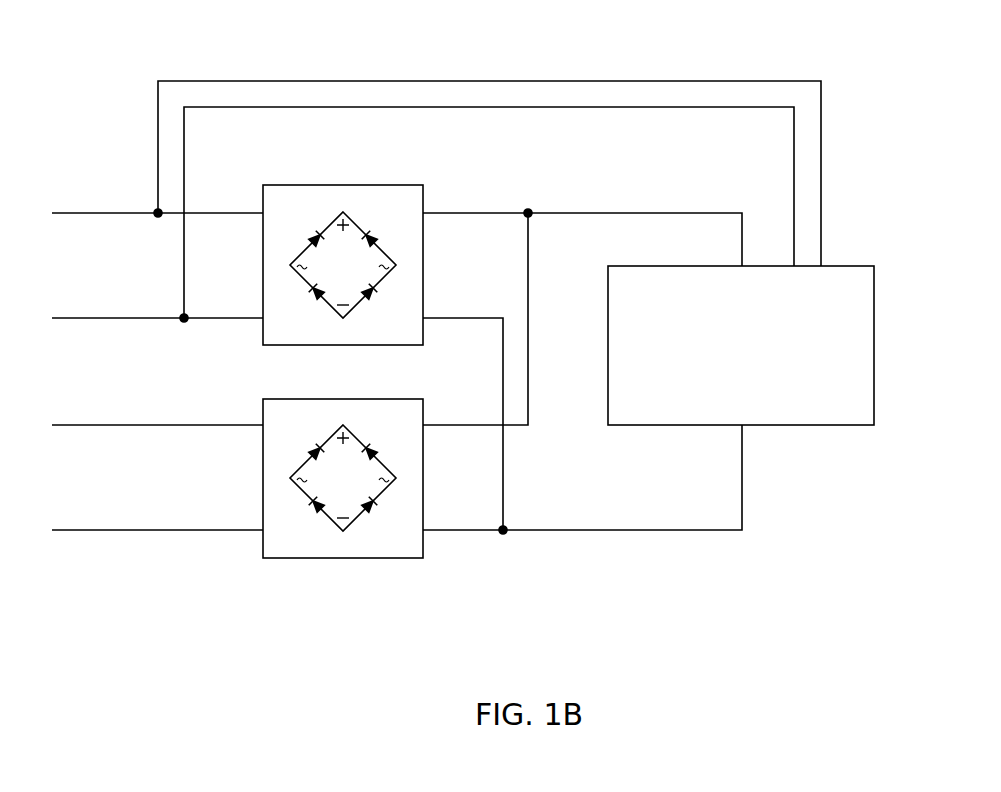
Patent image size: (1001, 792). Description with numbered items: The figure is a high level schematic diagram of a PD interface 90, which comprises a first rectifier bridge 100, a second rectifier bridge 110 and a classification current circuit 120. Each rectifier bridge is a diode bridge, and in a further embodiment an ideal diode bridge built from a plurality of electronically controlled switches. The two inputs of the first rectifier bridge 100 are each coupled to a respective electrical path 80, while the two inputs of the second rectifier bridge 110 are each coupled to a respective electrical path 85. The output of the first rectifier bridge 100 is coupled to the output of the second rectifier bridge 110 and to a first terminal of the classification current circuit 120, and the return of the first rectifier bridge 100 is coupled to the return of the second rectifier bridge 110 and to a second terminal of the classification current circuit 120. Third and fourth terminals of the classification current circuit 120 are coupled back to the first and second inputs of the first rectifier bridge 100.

The PD interface 90 is at (857, 20).
The electrical path 80 is at (105, 213).
The electrical path 85 is at (105, 425).
The first rectifier bridge 100 is at (318, 185).
The second rectifier bridge 110 is at (343, 558).
The classification current circuit 120 is at (793, 425).